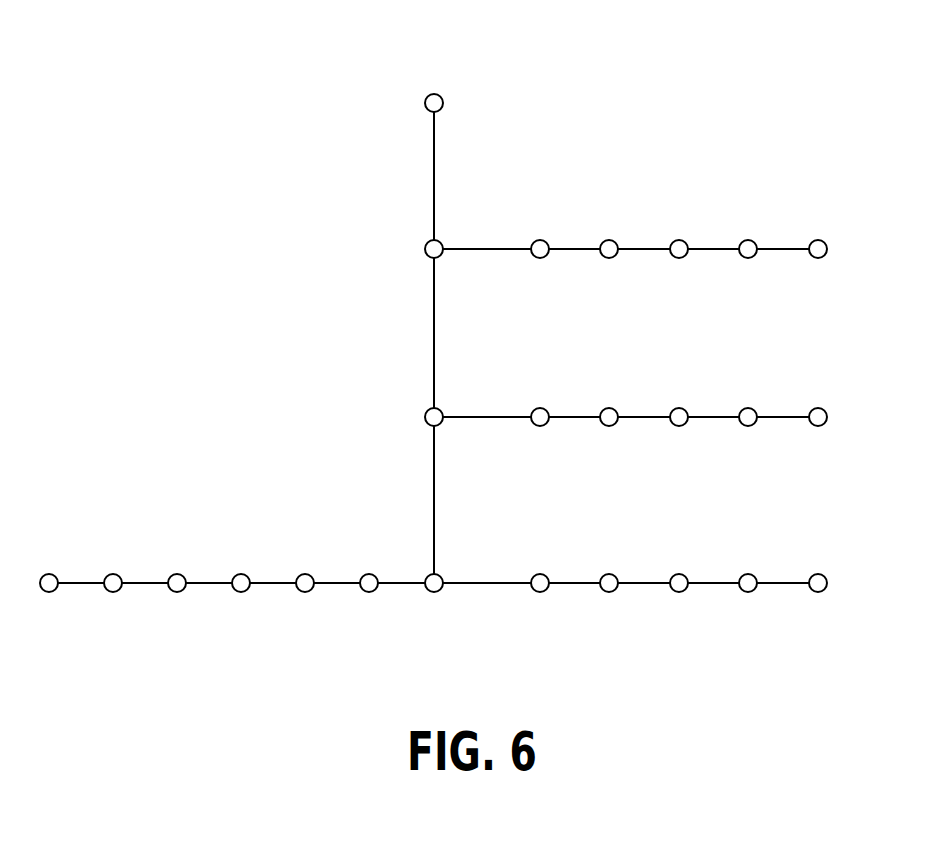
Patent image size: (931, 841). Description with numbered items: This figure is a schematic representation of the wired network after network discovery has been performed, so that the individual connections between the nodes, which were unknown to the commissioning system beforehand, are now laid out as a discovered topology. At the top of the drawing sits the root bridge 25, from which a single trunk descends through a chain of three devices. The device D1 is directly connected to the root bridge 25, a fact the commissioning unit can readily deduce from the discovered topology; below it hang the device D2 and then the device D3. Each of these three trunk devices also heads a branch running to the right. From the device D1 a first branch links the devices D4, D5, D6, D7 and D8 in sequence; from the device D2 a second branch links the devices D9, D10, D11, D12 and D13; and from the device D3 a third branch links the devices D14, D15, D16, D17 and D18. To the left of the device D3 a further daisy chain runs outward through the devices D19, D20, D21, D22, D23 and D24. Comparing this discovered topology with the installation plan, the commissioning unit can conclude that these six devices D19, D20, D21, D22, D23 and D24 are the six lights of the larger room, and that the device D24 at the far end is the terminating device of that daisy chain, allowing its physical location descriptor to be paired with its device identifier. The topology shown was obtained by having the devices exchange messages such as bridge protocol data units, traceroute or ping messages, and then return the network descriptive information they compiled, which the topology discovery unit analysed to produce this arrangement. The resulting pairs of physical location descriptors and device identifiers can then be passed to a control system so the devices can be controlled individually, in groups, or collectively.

The root bridge 25 is at (427, 96).
The device D1 is at (427, 243).
The device D2 is at (427, 411).
The device D3 is at (429, 593).
The device D4 is at (541, 240).
The device D5 is at (610, 240).
The device D6 is at (680, 240).
The device D7 is at (749, 240).
The device D8 is at (818, 240).
The device D9 is at (541, 408).
The device D10 is at (610, 408).
The device D11 is at (680, 408).
The device D12 is at (749, 408).
The device D13 is at (818, 408).
The device D14 is at (541, 574).
The device D15 is at (610, 574).
The device D16 is at (680, 574).
The device D17 is at (749, 574).
The device D18 is at (818, 574).
The device D19 is at (370, 574).
The device D20 is at (306, 574).
The device D21 is at (242, 574).
The device D22 is at (178, 574).
The device D23 is at (114, 574).
The device D24 is at (50, 574).